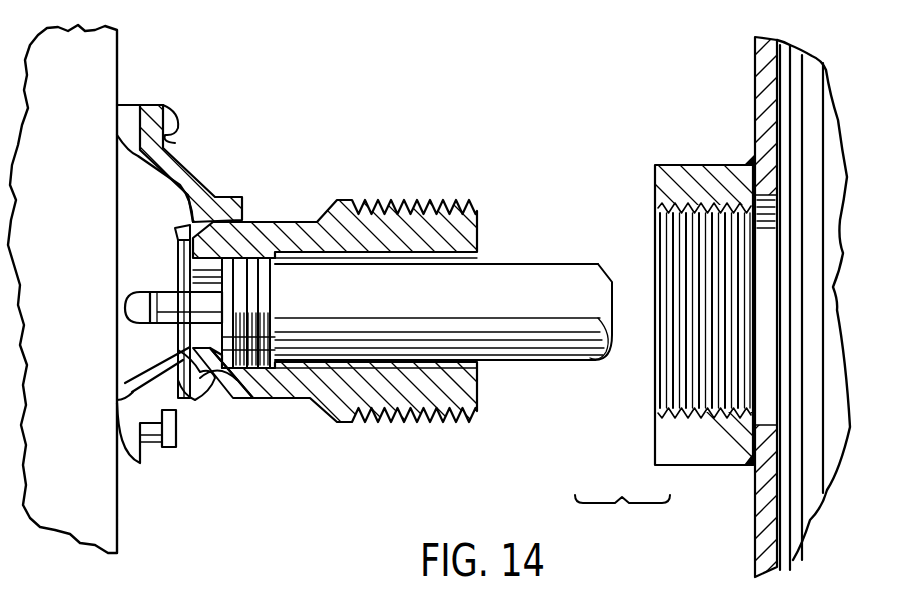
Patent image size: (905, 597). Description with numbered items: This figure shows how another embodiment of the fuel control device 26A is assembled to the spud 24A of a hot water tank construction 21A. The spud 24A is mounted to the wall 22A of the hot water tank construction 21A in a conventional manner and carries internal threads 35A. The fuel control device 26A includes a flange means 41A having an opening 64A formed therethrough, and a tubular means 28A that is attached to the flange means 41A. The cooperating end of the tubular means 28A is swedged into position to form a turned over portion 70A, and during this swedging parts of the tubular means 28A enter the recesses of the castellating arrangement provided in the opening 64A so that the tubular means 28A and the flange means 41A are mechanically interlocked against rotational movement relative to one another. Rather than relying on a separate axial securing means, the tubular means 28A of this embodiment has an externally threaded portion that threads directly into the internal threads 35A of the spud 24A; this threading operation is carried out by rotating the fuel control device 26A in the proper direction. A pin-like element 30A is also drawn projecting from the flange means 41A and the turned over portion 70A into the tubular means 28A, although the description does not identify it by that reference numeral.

The hot water tank construction 21A is at (755, 549).
The wall 22A is at (762, 57).
The spud 24A is at (695, 170).
The fuel control device 26A is at (108, 57).
The tubular means 28A is at (393, 207).
The pin 30A is at (200, 263).
The internal threads 35A is at (690, 213).
The flange means 41A is at (200, 172).
The opening 64A is at (218, 385).
The turned over portion 70A is at (177, 232).